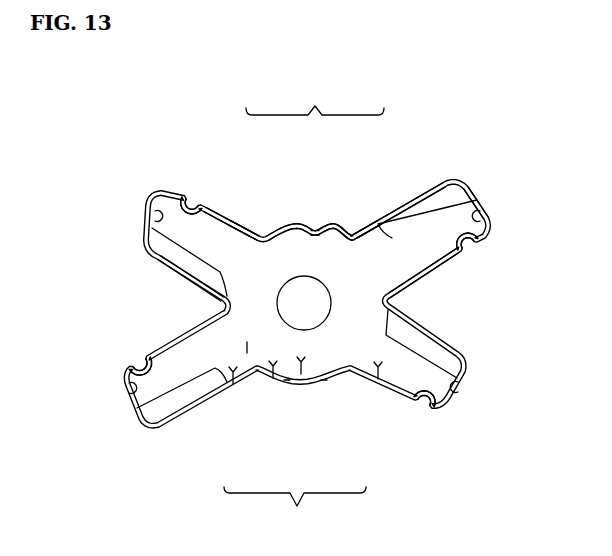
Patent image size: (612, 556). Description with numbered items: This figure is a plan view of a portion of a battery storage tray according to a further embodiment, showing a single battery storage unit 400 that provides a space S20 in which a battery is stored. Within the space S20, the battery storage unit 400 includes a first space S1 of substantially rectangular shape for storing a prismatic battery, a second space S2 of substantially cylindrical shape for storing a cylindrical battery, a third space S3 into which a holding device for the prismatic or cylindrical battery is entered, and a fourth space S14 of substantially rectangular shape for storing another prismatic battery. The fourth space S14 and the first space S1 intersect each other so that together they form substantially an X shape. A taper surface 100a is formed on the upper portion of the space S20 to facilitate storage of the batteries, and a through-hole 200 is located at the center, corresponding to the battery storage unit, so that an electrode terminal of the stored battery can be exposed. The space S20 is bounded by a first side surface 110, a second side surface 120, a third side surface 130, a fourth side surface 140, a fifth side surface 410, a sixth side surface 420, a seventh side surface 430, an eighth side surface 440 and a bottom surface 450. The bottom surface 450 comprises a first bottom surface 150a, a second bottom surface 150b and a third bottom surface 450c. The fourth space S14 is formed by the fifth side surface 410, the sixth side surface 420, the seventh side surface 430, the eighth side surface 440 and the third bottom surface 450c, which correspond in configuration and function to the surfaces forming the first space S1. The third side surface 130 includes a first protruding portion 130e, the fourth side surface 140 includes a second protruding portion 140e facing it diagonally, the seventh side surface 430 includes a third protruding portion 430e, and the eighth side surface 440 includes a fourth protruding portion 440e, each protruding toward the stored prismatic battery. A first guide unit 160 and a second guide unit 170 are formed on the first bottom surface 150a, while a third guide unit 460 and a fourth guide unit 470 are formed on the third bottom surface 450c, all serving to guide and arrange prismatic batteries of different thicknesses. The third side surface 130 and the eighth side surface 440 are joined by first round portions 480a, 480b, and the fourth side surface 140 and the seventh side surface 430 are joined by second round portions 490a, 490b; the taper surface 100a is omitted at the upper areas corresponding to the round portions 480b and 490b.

The battery storage unit 400 is at (129, 149).
The bottom surface 450 is at (315, 96).
The third bottom surface 450c is at (242, 228).
The second bottom surface 150b is at (312, 233).
The first bottom surface 150a is at (369, 230).
The fourth protruding portion 440e is at (189, 206).
The eighth side surface 440 is at (219, 206).
The first round portion 480a is at (299, 223).
The first round portion 480b is at (333, 223).
The third side surface 130 is at (423, 194).
The first guide unit 160 is at (449, 190).
The taper surface 100a is at (473, 201).
The fifth side surface 410 is at (160, 205).
The third guide unit 460 is at (152, 243).
The seventh side surface 430 is at (167, 264).
The first protruding portion 130e is at (131, 370).
The second side surface 120 is at (125, 388).
The second guide unit 170 is at (166, 411).
The first side surface 110 is at (489, 223).
The second protruding portion 140e is at (461, 256).
The fourth side surface 140 is at (427, 273).
The through-hole 200 is at (332, 303).
The fourth guide unit 470 is at (454, 362).
The sixth side surface 420 is at (458, 387).
The third protruding portion 430e is at (431, 409).
The second round portion 490a is at (287, 384).
The second round portion 490b is at (324, 383).
The first space S1 is at (233, 385).
The third space S3 is at (273, 379).
The second space S2 is at (301, 375).
The fourth space S14 is at (378, 380).
The space S20 is at (295, 509).